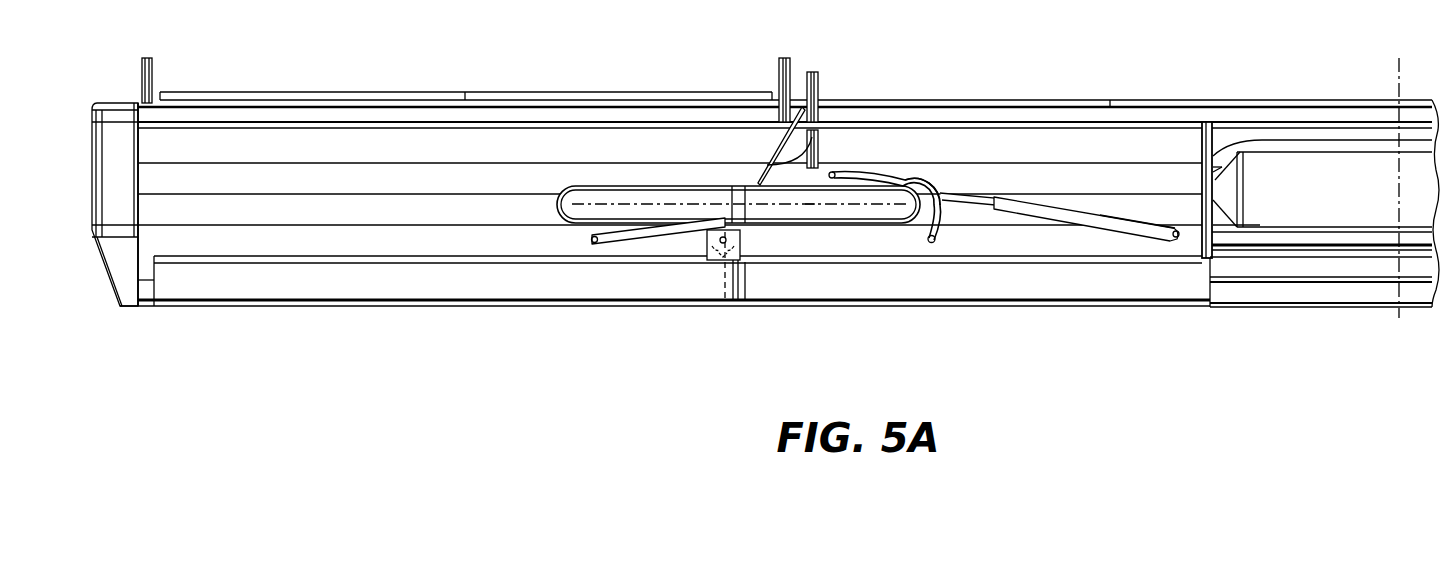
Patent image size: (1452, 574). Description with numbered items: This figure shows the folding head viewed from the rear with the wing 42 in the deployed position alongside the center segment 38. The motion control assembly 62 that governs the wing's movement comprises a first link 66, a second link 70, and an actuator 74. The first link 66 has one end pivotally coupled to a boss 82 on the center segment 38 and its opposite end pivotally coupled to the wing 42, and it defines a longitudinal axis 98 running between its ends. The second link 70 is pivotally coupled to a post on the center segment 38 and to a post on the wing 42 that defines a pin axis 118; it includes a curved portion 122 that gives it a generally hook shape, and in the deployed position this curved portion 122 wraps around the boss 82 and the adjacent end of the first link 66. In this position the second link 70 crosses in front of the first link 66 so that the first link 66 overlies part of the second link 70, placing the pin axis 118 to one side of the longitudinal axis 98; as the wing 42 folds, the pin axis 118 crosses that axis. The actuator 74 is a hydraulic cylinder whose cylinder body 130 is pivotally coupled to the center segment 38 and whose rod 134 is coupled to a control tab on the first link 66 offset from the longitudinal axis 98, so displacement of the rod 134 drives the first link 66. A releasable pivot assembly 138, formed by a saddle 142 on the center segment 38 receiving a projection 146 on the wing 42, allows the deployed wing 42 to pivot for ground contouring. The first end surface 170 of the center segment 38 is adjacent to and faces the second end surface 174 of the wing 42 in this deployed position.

The center segment 38 is at (1187, 100).
The wing 42 is at (340, 108).
The motion control assembly 62 is at (611, 329).
The first link 66 is at (651, 183).
The second link 70 is at (890, 178).
The actuator 74 is at (1115, 228).
The boss 82 is at (903, 227).
The longitudinal axis 98 is at (810, 205).
The pin axis 118 is at (590, 240).
The curved portion 122 is at (925, 178).
The cylinder body 130 is at (1055, 213).
The rod 134 is at (958, 190).
The releasable pivot assembly 138 is at (707, 275).
The saddle 142 is at (707, 245).
The projection 146 is at (725, 302).
The first end surface 170 is at (790, 125).
The second end surface 174 is at (767, 165).